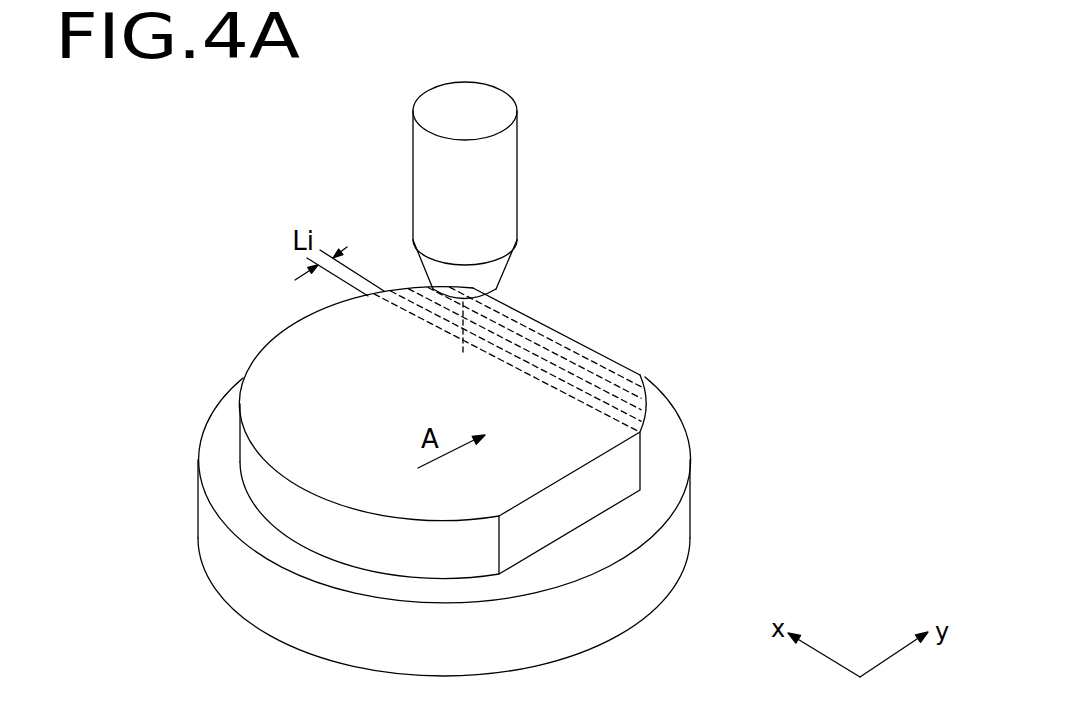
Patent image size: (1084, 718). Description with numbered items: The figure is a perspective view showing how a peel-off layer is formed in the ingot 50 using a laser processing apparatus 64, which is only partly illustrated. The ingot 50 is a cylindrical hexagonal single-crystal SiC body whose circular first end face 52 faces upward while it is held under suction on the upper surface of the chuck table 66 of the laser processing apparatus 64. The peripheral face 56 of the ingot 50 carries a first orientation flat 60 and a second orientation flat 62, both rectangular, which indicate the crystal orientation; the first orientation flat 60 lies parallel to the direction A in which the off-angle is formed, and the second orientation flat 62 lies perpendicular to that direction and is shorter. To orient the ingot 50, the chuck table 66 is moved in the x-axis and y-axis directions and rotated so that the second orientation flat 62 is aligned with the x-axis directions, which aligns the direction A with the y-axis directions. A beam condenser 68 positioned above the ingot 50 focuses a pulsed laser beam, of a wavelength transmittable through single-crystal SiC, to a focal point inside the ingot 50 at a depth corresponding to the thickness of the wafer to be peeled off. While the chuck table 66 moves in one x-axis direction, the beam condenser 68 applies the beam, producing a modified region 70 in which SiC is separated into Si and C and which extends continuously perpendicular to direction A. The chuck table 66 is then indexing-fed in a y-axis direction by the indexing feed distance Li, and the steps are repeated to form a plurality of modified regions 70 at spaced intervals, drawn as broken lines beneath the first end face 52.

The ingot 50 is at (272, 335).
The first end face 52 is at (275, 378).
The peripheral face 56 is at (283, 513).
The first orientation flat 60 is at (595, 500).
The second orientation flat 62 is at (573, 323).
The laser processing apparatus 64 is at (757, 205).
The chuck table 66 is at (662, 430).
The beam condenser 68 is at (493, 217).
The modified region 70 is at (612, 394).